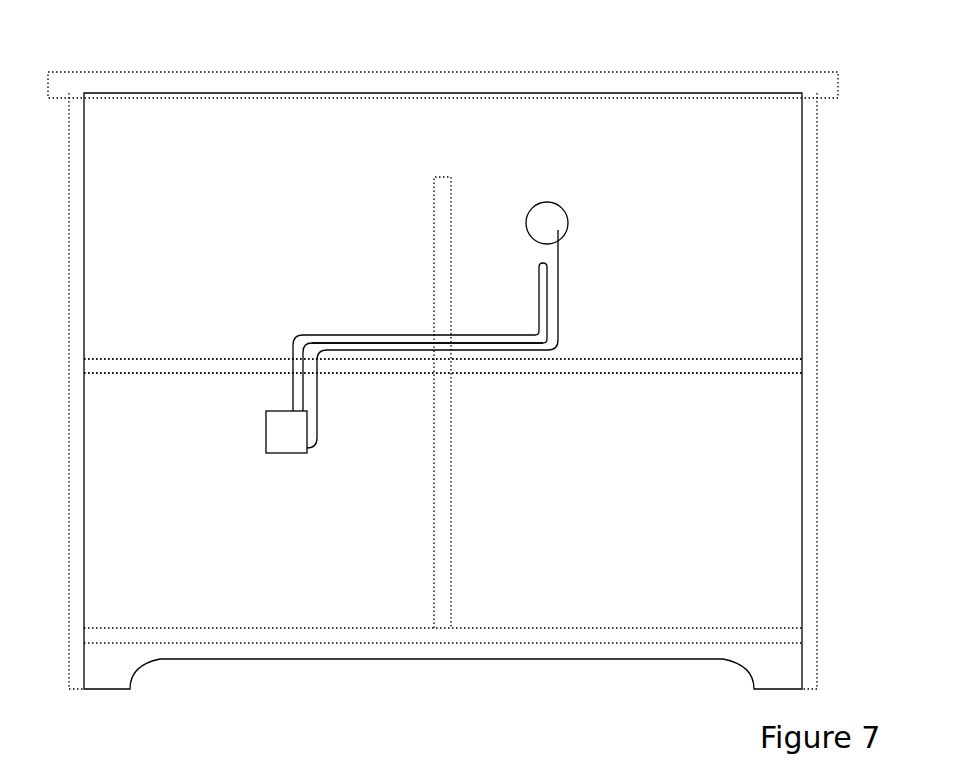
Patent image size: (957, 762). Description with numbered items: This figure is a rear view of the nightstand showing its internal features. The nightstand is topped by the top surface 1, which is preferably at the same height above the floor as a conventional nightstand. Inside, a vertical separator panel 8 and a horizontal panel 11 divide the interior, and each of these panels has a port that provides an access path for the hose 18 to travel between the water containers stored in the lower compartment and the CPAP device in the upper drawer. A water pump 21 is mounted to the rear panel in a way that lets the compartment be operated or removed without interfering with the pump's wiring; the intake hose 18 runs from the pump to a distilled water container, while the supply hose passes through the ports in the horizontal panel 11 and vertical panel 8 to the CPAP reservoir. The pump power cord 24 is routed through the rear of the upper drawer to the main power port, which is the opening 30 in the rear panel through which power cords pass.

The top surface 1 is at (160, 76).
The vertical separator panel 8 is at (442, 238).
The horizontal panel 11 is at (130, 358).
The hose 18 is at (389, 335).
The water pump 21 is at (289, 425).
The pump power cord 24 is at (410, 350).
The opening 30 is at (552, 208).